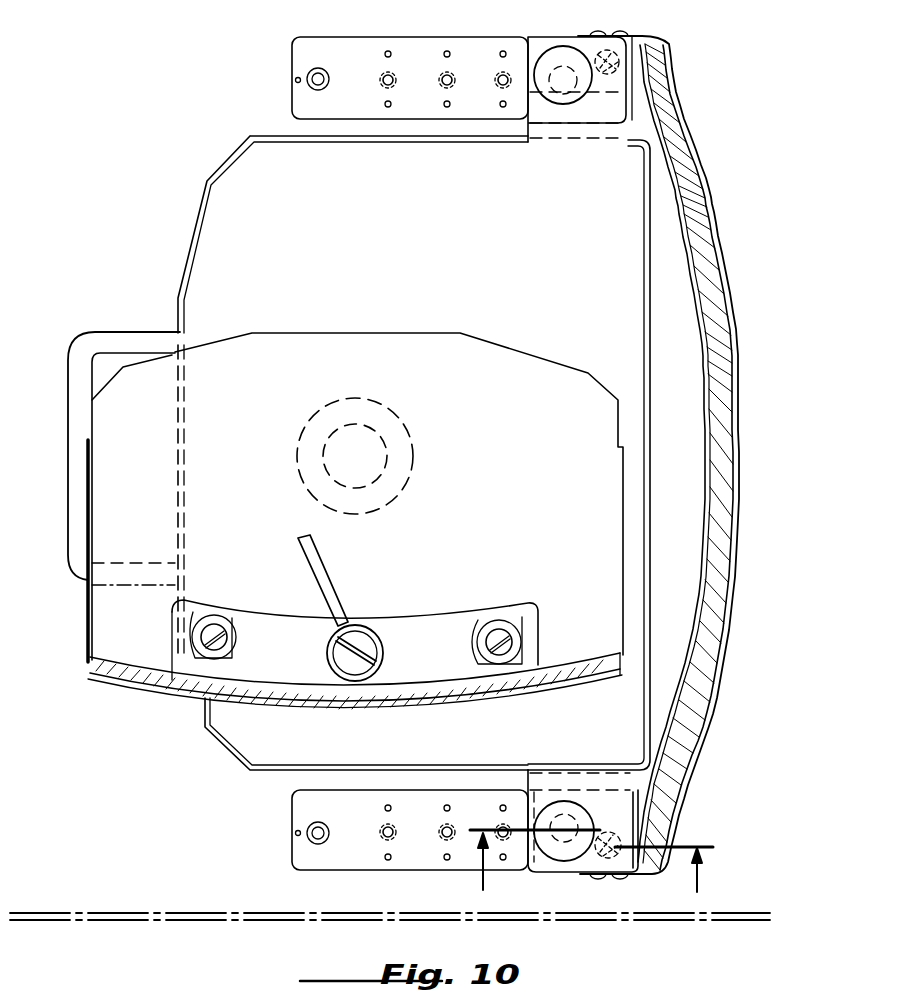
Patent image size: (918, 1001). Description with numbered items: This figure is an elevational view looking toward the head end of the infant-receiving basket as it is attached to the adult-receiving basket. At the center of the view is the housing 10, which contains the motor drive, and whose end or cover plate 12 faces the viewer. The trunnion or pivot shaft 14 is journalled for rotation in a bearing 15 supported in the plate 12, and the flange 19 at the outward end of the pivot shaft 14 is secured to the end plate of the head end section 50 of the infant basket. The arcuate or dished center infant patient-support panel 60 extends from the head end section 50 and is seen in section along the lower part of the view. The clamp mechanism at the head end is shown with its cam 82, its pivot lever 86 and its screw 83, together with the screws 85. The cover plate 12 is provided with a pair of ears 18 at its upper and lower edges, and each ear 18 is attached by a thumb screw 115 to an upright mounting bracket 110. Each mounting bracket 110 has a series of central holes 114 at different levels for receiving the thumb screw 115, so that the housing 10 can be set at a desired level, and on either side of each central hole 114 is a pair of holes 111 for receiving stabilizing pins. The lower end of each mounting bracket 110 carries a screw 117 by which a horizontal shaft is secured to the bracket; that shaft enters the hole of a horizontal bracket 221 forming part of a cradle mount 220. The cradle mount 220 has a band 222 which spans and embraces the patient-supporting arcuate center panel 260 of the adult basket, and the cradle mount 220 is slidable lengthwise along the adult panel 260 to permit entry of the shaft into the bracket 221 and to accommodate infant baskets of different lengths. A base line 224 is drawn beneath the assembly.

The housing 10 is at (203, 190).
The cover plate 12 is at (217, 248).
The trunnion or pivot shaft 14 is at (383, 454).
The bearing 15 is at (570, 58).
The ears 18 is at (541, 46).
The flange 19 is at (395, 424).
The head end section 50 is at (430, 331).
The center infant patient-support panel 60 is at (176, 683).
The cam 82 is at (383, 668).
The screw 83 is at (338, 660).
The screw 85 is at (214, 630).
The pivot lever 86 is at (320, 565).
The mounting bracket 110 is at (302, 62).
The holes 111 is at (385, 52).
The central holes 114 is at (444, 76).
The thumb screw 115 is at (548, 860).
The screw 117 is at (622, 80).
The cradle mount 220 is at (668, 44).
The horizontal bracket 221 is at (556, 128).
The band 222 is at (700, 335).
The base line 224 is at (173, 910).
The patient-supporting arcuate center panel 260 is at (728, 412).